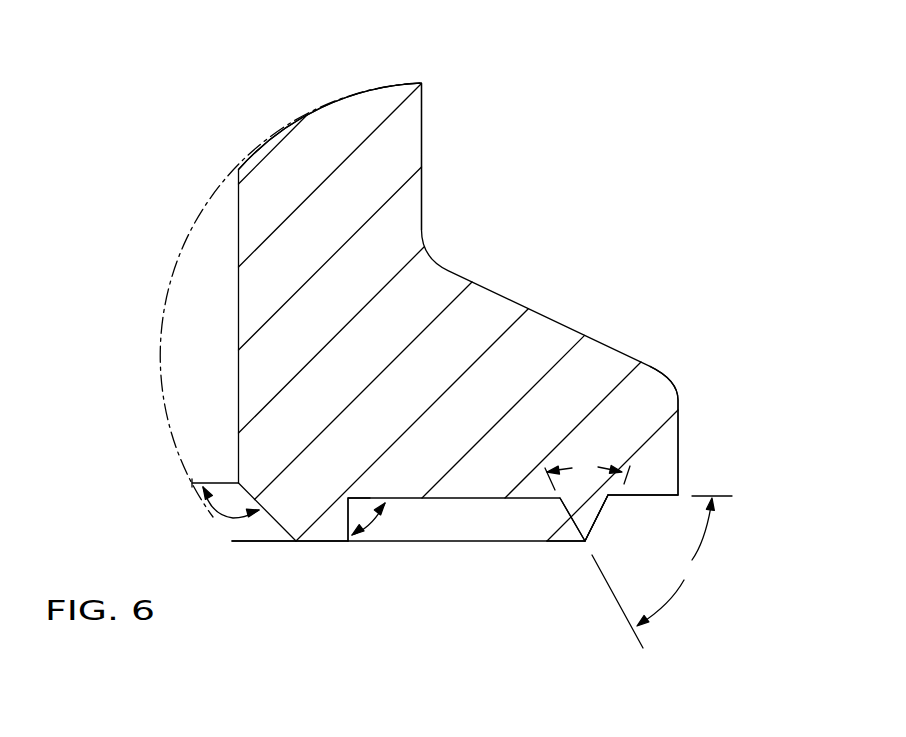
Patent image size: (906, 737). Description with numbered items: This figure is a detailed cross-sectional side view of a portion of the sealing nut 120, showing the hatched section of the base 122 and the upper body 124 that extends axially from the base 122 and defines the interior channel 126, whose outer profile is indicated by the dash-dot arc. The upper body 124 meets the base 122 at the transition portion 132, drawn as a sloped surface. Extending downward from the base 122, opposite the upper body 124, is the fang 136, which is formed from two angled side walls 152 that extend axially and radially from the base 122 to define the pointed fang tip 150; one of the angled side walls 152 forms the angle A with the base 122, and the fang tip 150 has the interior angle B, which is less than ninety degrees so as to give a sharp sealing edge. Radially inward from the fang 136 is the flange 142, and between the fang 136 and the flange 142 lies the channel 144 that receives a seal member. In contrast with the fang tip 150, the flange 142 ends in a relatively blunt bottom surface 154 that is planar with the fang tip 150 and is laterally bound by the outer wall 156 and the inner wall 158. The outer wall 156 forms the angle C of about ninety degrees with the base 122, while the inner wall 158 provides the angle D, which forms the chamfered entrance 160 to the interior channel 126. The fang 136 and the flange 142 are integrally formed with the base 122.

The sealing nut 120 is at (560, 92).
The base 122 is at (683, 390).
The upper body 124 is at (423, 153).
The interior channel 126 is at (213, 434).
The transition portion 132 is at (546, 271).
The fang 136 is at (605, 520).
The flange 142 is at (284, 537).
The channel 144 is at (465, 525).
The fang tip 150 is at (583, 545).
The angled side walls 152 is at (610, 503).
The bottom surface 154 is at (323, 542).
The outer wall 156 is at (352, 518).
The inner wall 158 is at (262, 512).
The chamfered entrance 160 is at (228, 528).
The angle A is at (662, 572).
The interior angle B is at (587, 471).
The angle C is at (375, 525).
The angle D is at (210, 521).